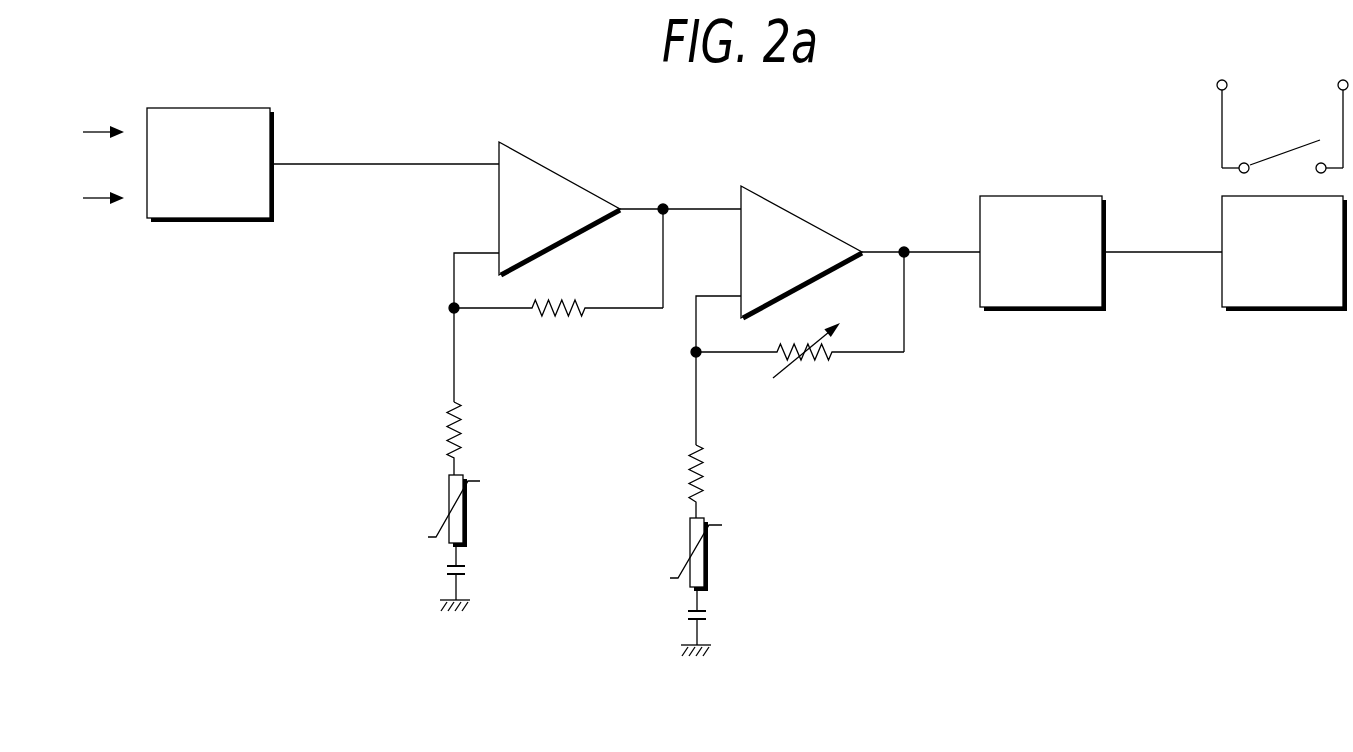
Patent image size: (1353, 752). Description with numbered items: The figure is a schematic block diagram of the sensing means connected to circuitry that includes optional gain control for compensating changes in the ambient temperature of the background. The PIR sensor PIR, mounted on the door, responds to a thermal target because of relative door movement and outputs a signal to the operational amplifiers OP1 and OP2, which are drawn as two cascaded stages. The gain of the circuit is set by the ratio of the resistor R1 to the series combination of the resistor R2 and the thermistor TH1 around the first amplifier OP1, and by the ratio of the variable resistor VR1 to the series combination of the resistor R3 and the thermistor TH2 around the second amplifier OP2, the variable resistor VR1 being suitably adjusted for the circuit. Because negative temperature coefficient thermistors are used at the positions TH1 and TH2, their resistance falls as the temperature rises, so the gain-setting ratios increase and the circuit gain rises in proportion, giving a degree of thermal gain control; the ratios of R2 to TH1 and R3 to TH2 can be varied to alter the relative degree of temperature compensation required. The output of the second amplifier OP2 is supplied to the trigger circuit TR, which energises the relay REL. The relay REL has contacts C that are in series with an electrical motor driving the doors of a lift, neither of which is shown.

The PIR sensor PIR is at (210, 165).
The op-amp OP1 is at (553, 172).
The op-amp OP2 is at (797, 216).
The resistor R1 is at (577, 320).
The resistor R2 is at (443, 440).
The resistor R3 is at (684, 481).
The variable resistor VR1 is at (821, 365).
The thermistor TH1 is at (440, 519).
The thermistor TH2 is at (684, 560).
The contacts C is at (883, 368).
The trigger circuit TR is at (1043, 253).
The relay REL is at (1284, 253).